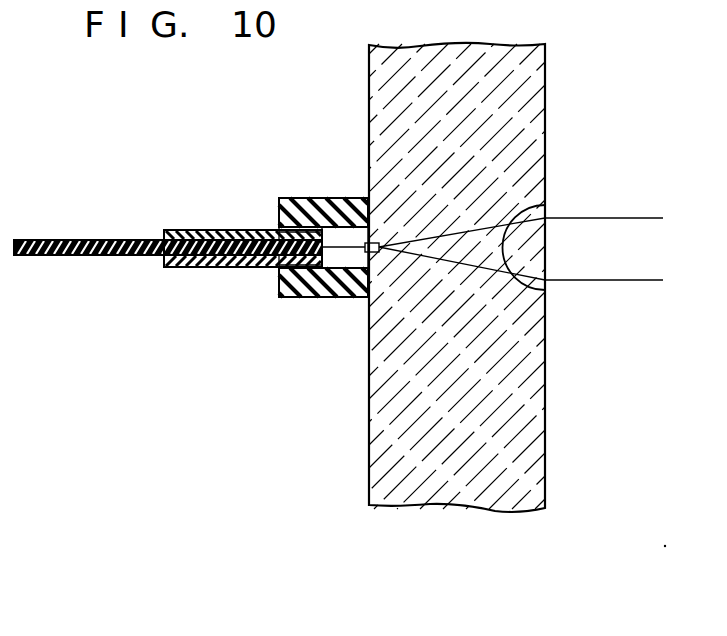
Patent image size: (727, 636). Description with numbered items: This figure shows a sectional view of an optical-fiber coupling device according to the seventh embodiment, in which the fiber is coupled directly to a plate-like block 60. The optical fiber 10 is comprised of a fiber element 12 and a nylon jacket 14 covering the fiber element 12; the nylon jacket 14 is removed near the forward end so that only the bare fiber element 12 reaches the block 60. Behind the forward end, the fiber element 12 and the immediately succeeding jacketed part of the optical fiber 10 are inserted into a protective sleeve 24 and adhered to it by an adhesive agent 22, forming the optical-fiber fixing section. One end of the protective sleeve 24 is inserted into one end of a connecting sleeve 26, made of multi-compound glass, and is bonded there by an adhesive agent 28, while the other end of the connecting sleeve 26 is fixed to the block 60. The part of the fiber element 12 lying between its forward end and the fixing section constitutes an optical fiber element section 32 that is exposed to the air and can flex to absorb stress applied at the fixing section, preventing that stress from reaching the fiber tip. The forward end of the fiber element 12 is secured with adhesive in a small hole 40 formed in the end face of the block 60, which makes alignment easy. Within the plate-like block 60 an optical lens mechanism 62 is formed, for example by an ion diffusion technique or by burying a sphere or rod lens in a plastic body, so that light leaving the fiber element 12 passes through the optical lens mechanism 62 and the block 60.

The optical fiber 10 is at (68, 241).
The fiber element 12 is at (110, 240).
The nylon jacket 14 is at (86, 256).
The adhesive agent 22 is at (256, 243).
The protective sleeve 24 is at (184, 233).
The connecting sleeve 26 is at (300, 297).
The adhesive agent 28 is at (281, 268).
The optical fiber element section 32 is at (322, 204).
The small hole 40 is at (350, 226).
The plate-like block 60 is at (546, 418).
The optical lens mechanism 62 is at (538, 208).